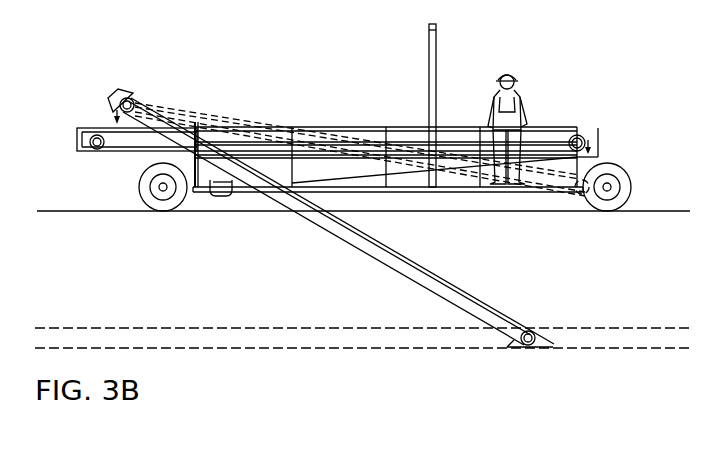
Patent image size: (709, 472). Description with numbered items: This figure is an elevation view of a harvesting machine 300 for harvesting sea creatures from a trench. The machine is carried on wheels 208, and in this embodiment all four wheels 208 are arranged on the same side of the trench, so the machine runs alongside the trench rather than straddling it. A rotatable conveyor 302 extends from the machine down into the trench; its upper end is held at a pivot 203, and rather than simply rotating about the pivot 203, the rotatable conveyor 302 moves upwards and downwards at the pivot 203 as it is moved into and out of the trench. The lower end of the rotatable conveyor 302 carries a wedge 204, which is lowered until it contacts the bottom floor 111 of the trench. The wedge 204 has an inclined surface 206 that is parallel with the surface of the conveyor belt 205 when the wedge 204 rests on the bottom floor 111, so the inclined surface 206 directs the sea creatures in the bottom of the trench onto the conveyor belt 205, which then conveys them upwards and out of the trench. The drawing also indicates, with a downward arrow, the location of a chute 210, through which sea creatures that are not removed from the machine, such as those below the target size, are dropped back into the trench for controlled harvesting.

The harvesting machine 300 is at (558, 68).
The pivot 203 is at (114, 102).
The wheels 208 is at (138, 186).
The conveyor belt 205 is at (412, 258).
The rotatable conveyor 302 is at (337, 237).
The wedge 204 is at (533, 349).
The inclined surface 206 is at (543, 336).
The bottom floor 111 is at (622, 350).
The chute 210 is at (223, 174).